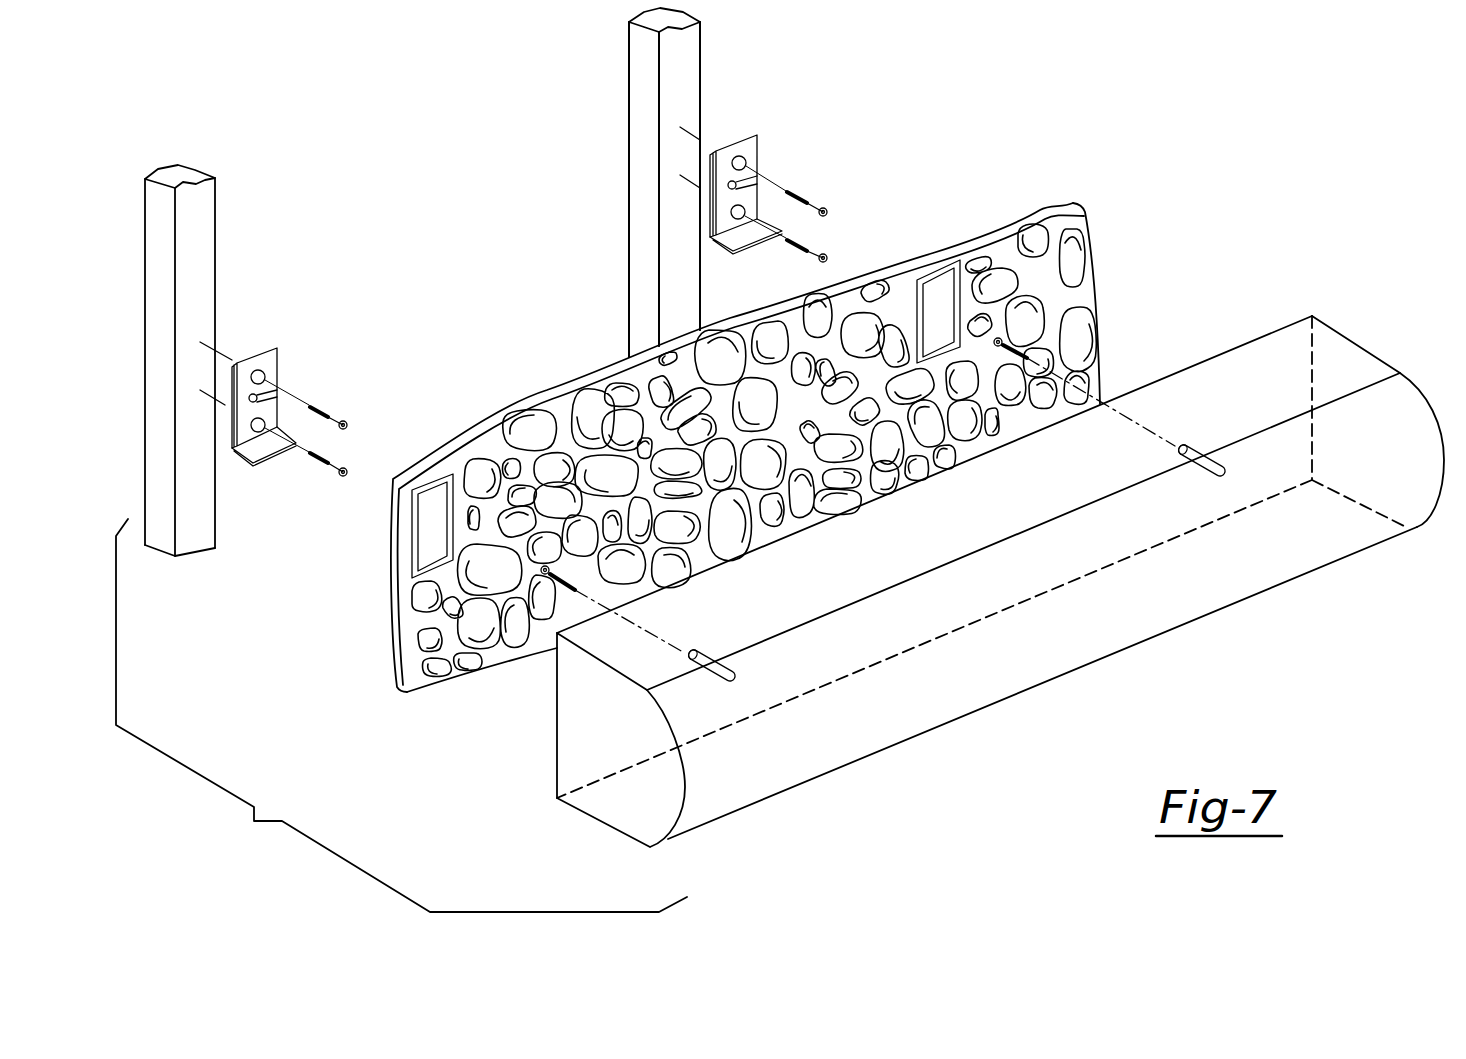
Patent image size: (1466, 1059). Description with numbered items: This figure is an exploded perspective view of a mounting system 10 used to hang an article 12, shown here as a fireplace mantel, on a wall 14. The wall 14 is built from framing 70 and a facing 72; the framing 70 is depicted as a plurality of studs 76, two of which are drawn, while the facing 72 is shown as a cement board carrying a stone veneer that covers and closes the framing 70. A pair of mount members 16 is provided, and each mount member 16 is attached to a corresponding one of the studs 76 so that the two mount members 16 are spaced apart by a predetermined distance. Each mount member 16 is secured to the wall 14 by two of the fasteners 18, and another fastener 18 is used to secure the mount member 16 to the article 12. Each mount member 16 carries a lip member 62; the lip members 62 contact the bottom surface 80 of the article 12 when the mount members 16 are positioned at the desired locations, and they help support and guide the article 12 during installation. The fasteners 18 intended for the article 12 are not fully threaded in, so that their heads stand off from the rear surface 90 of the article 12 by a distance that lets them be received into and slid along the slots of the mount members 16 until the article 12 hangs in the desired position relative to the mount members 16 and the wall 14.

The mounting system 10 is at (755, 122).
The article 12 is at (1408, 430).
The wall 14 is at (490, 208).
The mount member 16 is at (282, 366).
The fastener 18 is at (317, 468).
The lip member 62 is at (257, 452).
The framing 70 is at (638, 238).
The facing 72 is at (622, 385).
The stud 76 is at (197, 222).
The bottom surface 80 is at (596, 823).
The rear surface 90 is at (557, 744).